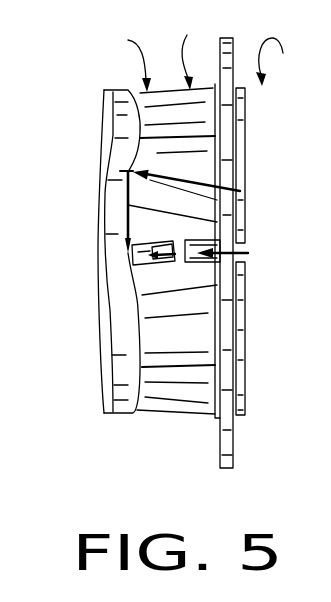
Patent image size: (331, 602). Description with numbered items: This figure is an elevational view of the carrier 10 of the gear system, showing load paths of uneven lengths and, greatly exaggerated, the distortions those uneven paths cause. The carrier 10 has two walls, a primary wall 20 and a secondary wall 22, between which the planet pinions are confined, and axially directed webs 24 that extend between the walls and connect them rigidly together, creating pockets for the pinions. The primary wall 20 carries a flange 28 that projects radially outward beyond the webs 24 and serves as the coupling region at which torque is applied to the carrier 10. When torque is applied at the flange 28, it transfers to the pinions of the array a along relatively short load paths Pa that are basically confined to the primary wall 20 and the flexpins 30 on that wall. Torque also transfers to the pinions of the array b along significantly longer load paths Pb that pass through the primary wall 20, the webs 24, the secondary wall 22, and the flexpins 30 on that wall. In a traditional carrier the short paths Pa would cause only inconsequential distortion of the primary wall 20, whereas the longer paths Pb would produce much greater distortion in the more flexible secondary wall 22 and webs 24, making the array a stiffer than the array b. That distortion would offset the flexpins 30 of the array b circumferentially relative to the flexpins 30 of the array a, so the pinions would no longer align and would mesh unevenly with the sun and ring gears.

The carrier 10 is at (103, 107).
The secondary wall 22 is at (128, 364).
The webs 24 is at (157, 158).
The flange 28 is at (223, 451).
The primary wall 20 is at (226, 389).
The flexpins 30 is at (150, 262).
The load paths Pa is at (203, 262).
The load paths Pb is at (123, 231).
The array a is at (188, 52).
The array b is at (132, 60).